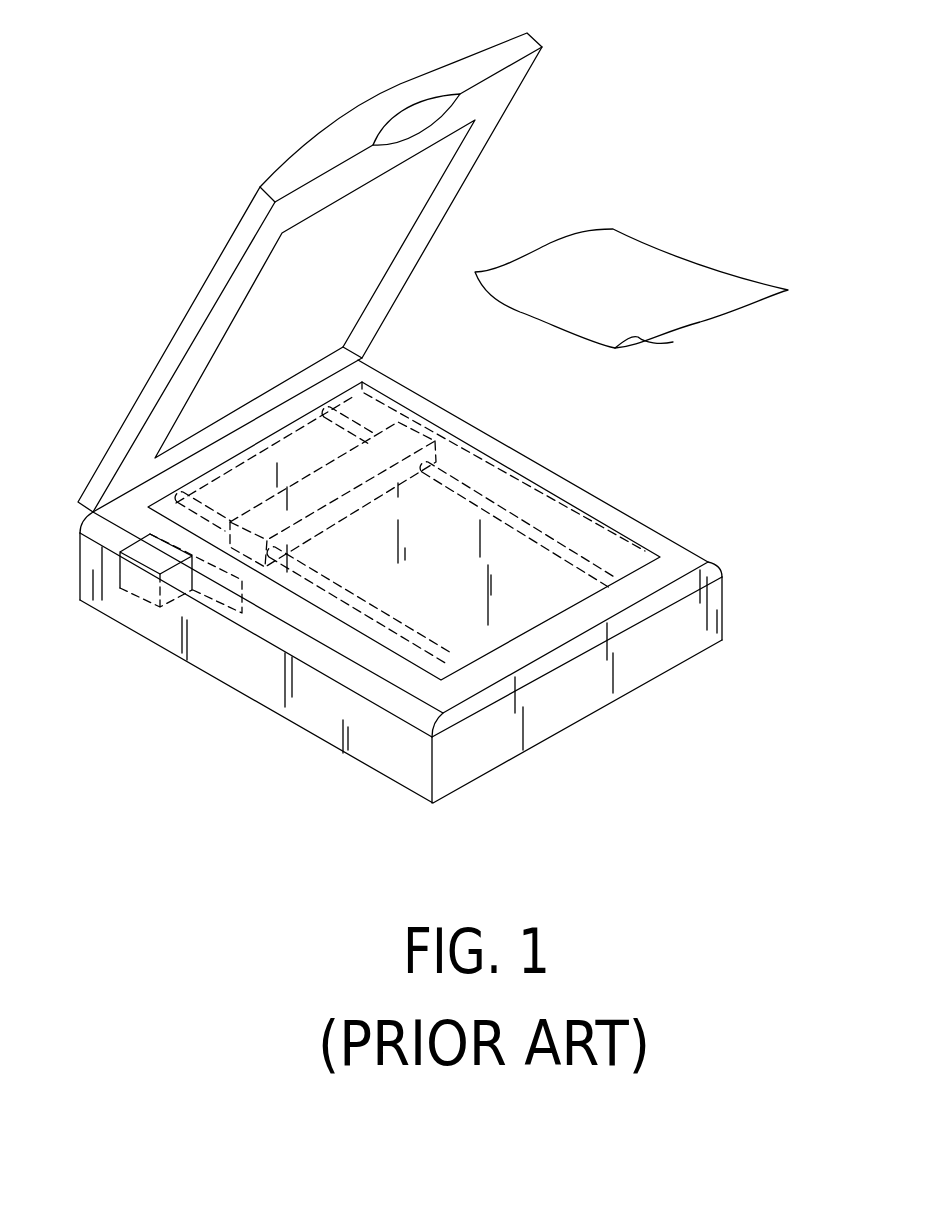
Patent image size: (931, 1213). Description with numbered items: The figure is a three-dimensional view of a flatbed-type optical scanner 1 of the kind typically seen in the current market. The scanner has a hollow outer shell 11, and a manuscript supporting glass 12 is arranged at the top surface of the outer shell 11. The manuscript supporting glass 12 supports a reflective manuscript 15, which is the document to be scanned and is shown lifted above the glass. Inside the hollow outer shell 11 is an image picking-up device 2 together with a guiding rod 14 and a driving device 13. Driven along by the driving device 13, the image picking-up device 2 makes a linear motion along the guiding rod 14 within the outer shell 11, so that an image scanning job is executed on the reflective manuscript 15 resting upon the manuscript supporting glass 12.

The optical scanner 1 is at (419, 429).
The image picking-up device 2 is at (400, 430).
The outer shell 11 is at (673, 557).
The manuscript supporting glass 12 is at (508, 465).
The driving device 13 is at (140, 583).
The guiding rod 14 is at (507, 507).
The reflective manuscript 15 is at (632, 251).